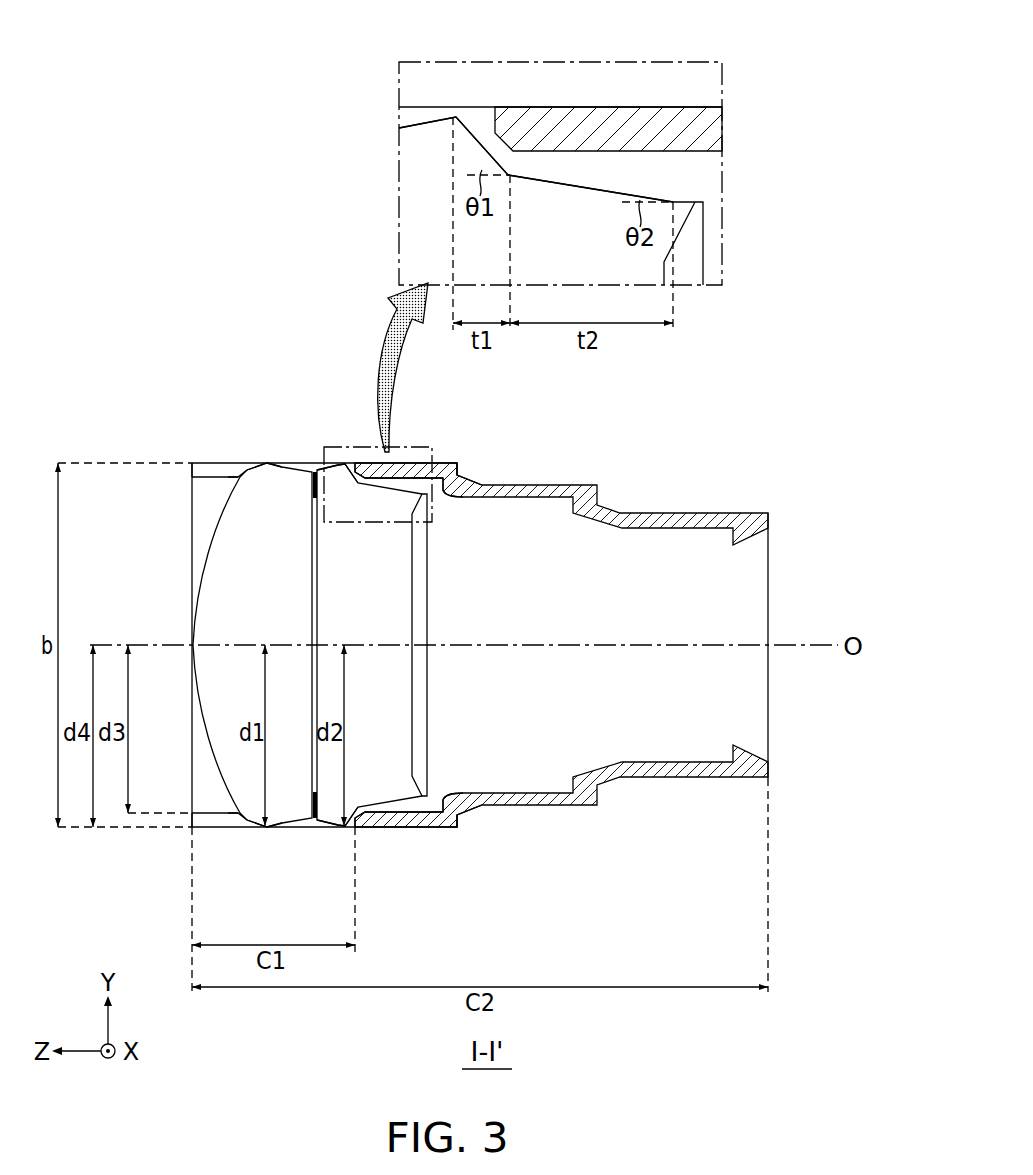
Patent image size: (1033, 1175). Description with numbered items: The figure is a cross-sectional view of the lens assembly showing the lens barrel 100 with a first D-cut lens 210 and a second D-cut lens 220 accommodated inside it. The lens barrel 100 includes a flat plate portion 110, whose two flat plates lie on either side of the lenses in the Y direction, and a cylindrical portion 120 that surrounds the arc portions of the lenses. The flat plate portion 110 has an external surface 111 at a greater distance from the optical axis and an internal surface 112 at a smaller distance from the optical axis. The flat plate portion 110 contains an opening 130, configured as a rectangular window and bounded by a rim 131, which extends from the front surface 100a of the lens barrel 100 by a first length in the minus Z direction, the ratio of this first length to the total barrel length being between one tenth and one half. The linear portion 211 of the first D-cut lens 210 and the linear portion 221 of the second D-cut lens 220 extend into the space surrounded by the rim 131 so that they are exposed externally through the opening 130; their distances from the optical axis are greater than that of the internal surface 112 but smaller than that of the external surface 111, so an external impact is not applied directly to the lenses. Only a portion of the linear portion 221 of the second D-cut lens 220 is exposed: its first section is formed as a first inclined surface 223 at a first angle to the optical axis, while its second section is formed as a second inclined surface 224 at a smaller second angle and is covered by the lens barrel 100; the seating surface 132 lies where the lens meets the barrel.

The lens barrel 100 is at (663, 500).
The front end of lens barrel 100a is at (192, 470).
The flat plate portion 110 is at (410, 466).
The external surface 111 is at (448, 462).
The internal surface 112 is at (450, 492).
The cylindrical portion 120 is at (194, 498).
The opening 130 is at (209, 468).
The rim 131 is at (237, 470).
The second seating surface 132 is at (345, 463).
The first D-cut lens 210 is at (237, 600).
The linear portion 211 is at (273, 463).
The second D-cut lens 220 is at (344, 600).
The linear portion 221 is at (331, 467).
The first inclined surface 223 is at (475, 121).
The second inclined surface 224 is at (574, 183).